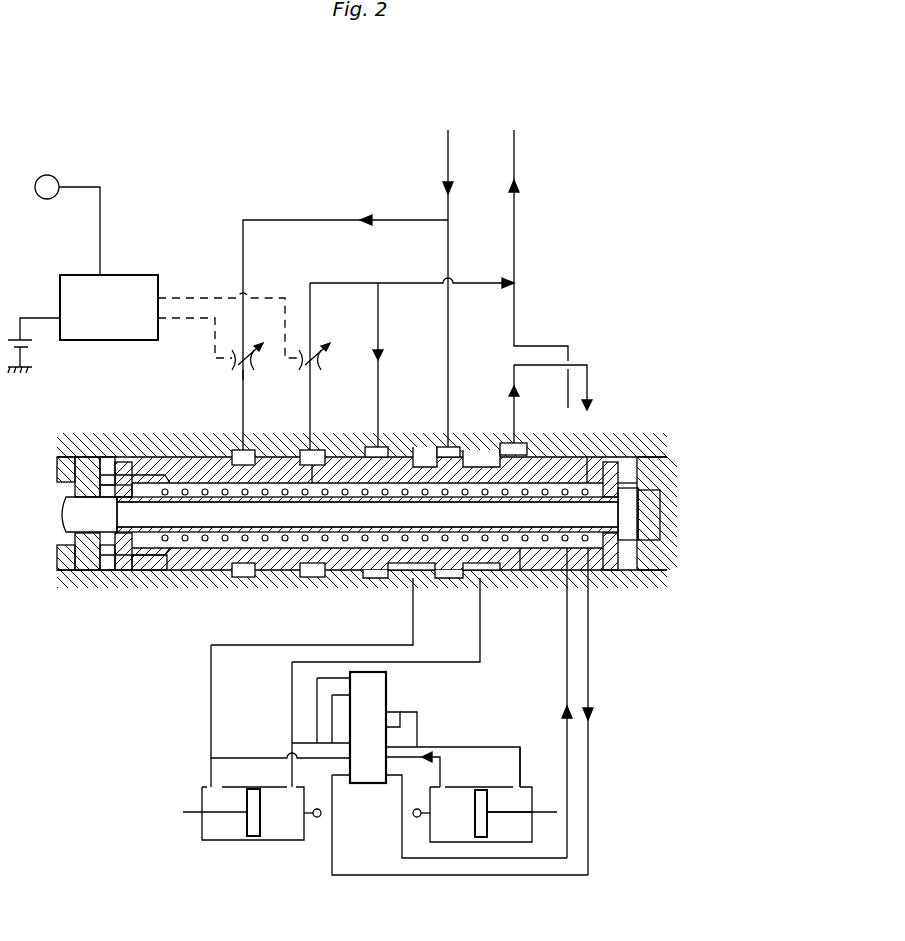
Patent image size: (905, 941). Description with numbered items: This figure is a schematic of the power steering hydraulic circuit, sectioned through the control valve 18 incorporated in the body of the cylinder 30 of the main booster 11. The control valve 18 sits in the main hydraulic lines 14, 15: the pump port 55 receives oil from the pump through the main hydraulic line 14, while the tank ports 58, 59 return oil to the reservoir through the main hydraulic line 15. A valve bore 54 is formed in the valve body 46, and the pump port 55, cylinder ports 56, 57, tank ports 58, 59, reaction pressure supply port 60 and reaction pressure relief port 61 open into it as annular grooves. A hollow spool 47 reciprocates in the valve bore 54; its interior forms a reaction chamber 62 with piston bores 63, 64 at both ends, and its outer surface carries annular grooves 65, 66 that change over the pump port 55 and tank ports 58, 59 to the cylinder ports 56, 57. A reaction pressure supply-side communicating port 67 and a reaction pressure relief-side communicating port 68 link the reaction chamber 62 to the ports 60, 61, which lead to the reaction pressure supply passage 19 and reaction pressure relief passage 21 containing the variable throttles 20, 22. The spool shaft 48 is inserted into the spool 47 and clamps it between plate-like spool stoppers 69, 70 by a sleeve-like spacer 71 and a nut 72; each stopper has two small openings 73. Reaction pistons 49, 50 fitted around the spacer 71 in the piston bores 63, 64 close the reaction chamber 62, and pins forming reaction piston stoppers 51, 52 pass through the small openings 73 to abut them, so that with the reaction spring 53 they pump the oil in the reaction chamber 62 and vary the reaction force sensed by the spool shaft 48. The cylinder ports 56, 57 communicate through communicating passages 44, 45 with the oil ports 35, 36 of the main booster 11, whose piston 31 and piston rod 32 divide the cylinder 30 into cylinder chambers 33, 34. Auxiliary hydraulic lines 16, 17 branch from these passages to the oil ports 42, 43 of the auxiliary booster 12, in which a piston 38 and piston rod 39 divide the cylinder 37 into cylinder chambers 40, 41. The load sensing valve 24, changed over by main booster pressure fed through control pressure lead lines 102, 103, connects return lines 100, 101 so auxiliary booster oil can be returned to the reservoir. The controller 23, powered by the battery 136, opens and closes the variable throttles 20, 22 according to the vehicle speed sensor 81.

The main booster 11 is at (284, 842).
The auxiliary booster 12 is at (535, 810).
The main hydraulic line 14 is at (452, 248).
The main hydraulic line 15 is at (517, 248).
The auxiliary hydraulic line 16 is at (302, 738).
The auxiliary hydraulic line 17 is at (225, 755).
The control valve 18 is at (170, 410).
The reaction pressure supply passage 19 is at (262, 220).
The reaction pressure supply-side variable throttle 20 is at (232, 365).
The reaction pressure relief passage 21 is at (320, 283).
The reaction pressure relief-side variable throttle 22 is at (318, 345).
The controller 23 is at (179, 272).
The load sensing valve 24 is at (368, 727).
The cylinder 30 is at (203, 840).
The piston 31 is at (252, 840).
The piston rod 32 is at (185, 812).
The cylinder chamber 33 is at (296, 810).
The cylinder chamber 34 is at (225, 826).
The oil port 35 is at (290, 785).
The oil port 36 is at (207, 782).
The cylinder 37 is at (532, 840).
The piston 38 is at (482, 790).
The piston rod 39 is at (509, 800).
The cylinder chamber 40 is at (509, 827).
The cylinder chamber 41 is at (436, 818).
The oil port 42 is at (525, 785).
The oil port 43 is at (432, 775).
The communicating passage 44 is at (478, 632).
The communicating passage 45 is at (410, 625).
The valve body 46 is at (630, 580).
The hollow spool 47 is at (190, 458).
The spool shaft 48 is at (64, 500).
The reaction piston 49 is at (592, 572).
The reaction piston 50 is at (150, 570).
The reaction piston stopper 51 is at (648, 462).
The reaction piston stopper 52 is at (88, 458).
The reaction spring 53 is at (318, 578).
The valve bore 54 is at (580, 457).
The pump port 55 is at (450, 447).
The cylinder port 56 is at (465, 578).
The cylinder port 57 is at (405, 578).
The tank port 58 is at (515, 443).
The tank port 59 is at (372, 447).
The reaction pressure supply port 60 is at (245, 448).
The reaction pressure relief port 61 is at (308, 448).
The reaction chamber 62 is at (520, 572).
The piston bore 63 is at (570, 572).
The piston bore 64 is at (135, 560).
The annular groove 65 is at (480, 450).
The annular groove 66 is at (425, 447).
The reaction pressure supply-side communicating port 67 is at (200, 465).
The reaction pressure relief-side communicating port 68 is at (310, 462).
The spool stopper 69 is at (625, 460).
The spool stopper 70 is at (108, 458).
The spacer 71 is at (330, 496).
The nut 72 is at (648, 535).
The small openings 73 is at (125, 462).
The vehicle speed sensor 81 is at (57, 175).
The return line 100 is at (418, 722).
The return line 101 is at (393, 712).
The control pressure lead line 102 is at (330, 715).
The control pressure lead line 103 is at (315, 690).
The battery 136 is at (22, 316).